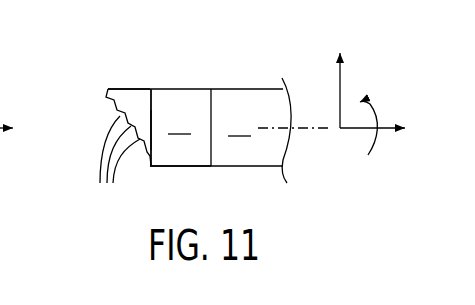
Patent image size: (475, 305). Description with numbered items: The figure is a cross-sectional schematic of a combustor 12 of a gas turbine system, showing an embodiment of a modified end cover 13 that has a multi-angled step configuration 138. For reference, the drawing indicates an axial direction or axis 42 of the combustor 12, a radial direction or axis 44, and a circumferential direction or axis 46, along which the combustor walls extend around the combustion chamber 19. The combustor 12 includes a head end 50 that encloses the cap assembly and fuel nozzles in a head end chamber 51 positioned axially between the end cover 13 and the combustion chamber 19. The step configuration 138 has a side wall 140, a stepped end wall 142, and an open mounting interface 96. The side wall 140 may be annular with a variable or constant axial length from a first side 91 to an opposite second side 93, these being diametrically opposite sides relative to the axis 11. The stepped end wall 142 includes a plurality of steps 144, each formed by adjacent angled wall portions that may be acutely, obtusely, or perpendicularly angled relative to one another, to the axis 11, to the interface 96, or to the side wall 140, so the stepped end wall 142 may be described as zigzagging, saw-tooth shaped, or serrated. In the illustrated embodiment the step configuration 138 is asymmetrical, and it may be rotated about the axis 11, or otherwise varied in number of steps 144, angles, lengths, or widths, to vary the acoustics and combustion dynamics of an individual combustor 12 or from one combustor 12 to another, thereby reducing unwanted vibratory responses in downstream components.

The axis 11 is at (298, 127).
The combustor 12 is at (262, 54).
The end cover 13 is at (90, 133).
The combustion chamber 19 is at (239, 124).
The axial direction or axis 42 is at (358, 128).
The radial direction or axis 44 is at (340, 93).
The circumferential direction or axis 46 is at (377, 106).
The head end 50 is at (185, 70).
The head end chamber 51 is at (179, 122).
The first side 91 is at (148, 167).
The second side 93 is at (151, 89).
The open mounting interface 96 is at (152, 127).
The multi-angled step configuration 138 is at (78, 178).
The side wall 140 is at (128, 88).
The stepped end wall 142 is at (100, 105).
The steps 144 is at (110, 169).